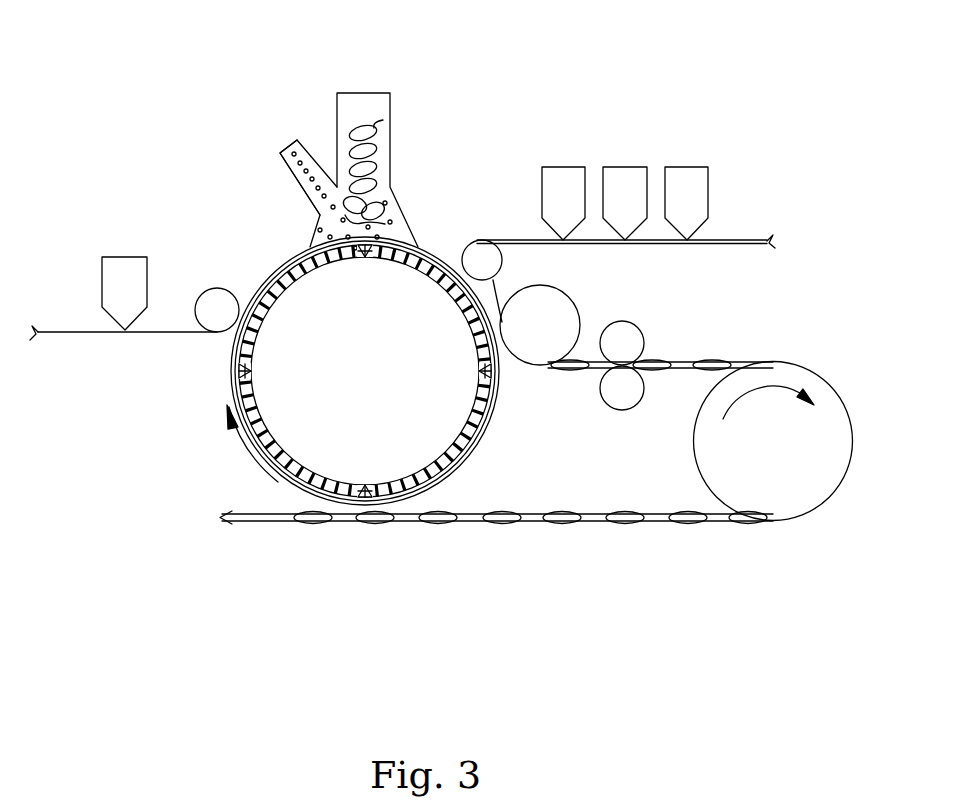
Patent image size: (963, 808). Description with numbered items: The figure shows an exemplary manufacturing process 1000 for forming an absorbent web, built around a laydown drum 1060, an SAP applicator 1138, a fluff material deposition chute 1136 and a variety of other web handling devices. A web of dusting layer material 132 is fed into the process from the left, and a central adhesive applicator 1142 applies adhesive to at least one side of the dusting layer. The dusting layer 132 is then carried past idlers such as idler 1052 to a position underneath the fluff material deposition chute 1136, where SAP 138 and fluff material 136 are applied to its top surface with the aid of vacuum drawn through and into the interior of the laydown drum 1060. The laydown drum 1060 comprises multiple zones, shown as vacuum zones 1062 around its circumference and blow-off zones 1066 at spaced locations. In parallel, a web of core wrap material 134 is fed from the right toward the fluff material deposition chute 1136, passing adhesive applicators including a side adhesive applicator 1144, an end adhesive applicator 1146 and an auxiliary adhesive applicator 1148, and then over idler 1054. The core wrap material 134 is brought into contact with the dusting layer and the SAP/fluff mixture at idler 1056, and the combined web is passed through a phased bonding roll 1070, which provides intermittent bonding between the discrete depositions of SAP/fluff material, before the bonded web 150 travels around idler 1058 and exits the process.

The process 1000 is at (142, 130).
The fluff material 136 is at (368, 120).
The fluff material deposition chute 1136 is at (390, 95).
The SAP 138 is at (297, 175).
The SAP applicator 1138 is at (296, 137).
The central adhesive applicator 1142 is at (125, 257).
The side adhesive applicator 1144 is at (687, 167).
The end adhesive applicator 1146 is at (625, 167).
The auxiliary adhesive applicator 1148 is at (563, 167).
The dusting layer material 132 is at (80, 332).
The core wrap material 134 is at (735, 240).
The idler 1052 is at (202, 290).
The idler 1054 is at (492, 263).
The idler 1056 is at (508, 367).
The idler 1058 is at (788, 486).
The laydown drum 1060 is at (289, 371).
The vacuum zones 1062 is at (283, 288).
The blow-off zones 1066 is at (363, 262).
The phased bonding roll 1070 is at (635, 325).
The absorbent core web 150 is at (655, 372).